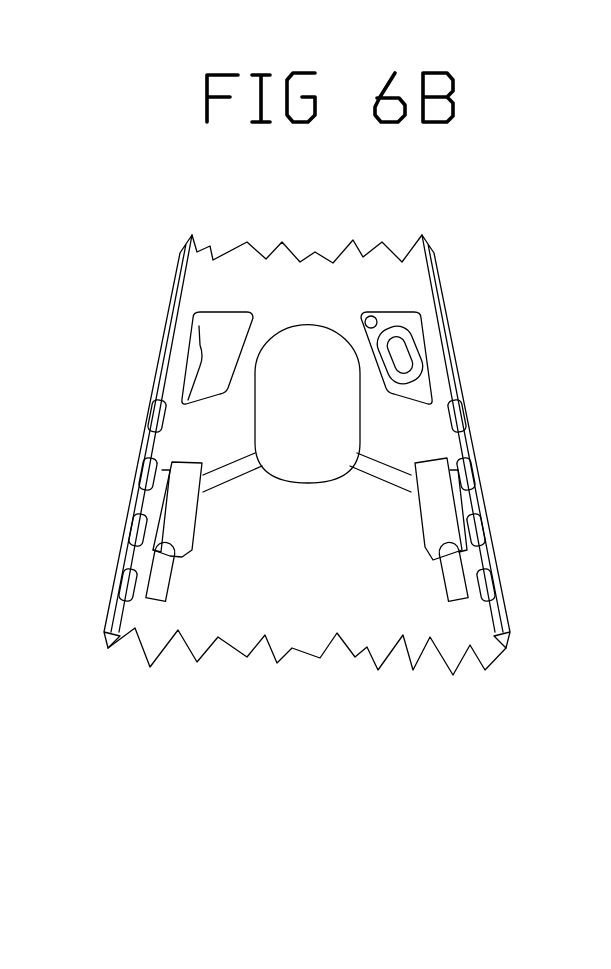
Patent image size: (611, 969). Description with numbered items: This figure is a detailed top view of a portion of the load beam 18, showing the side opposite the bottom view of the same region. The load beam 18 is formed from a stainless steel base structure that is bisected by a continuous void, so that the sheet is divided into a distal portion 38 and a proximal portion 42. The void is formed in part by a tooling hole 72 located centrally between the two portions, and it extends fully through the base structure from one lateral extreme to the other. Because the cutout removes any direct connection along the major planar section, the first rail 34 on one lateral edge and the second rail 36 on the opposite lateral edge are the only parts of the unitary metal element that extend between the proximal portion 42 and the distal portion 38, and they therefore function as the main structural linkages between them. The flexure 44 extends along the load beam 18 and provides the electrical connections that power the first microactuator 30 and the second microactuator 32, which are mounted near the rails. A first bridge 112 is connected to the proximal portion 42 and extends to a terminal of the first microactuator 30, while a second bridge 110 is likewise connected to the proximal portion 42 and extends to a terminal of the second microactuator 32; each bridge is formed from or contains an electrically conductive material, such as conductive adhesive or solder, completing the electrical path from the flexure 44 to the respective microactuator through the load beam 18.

The load beam 18 is at (399, 219).
The distal portion 38 is at (212, 260).
The proximal portion 42 is at (412, 650).
The second rail 36 is at (172, 325).
The first rail 34 is at (455, 378).
The tooling hole 72 is at (323, 323).
The flexure 44 is at (400, 357).
The second microactuator 32 is at (175, 462).
The first microactuator 30 is at (432, 468).
The second bridge 110 is at (157, 590).
The first bridge 112 is at (458, 590).